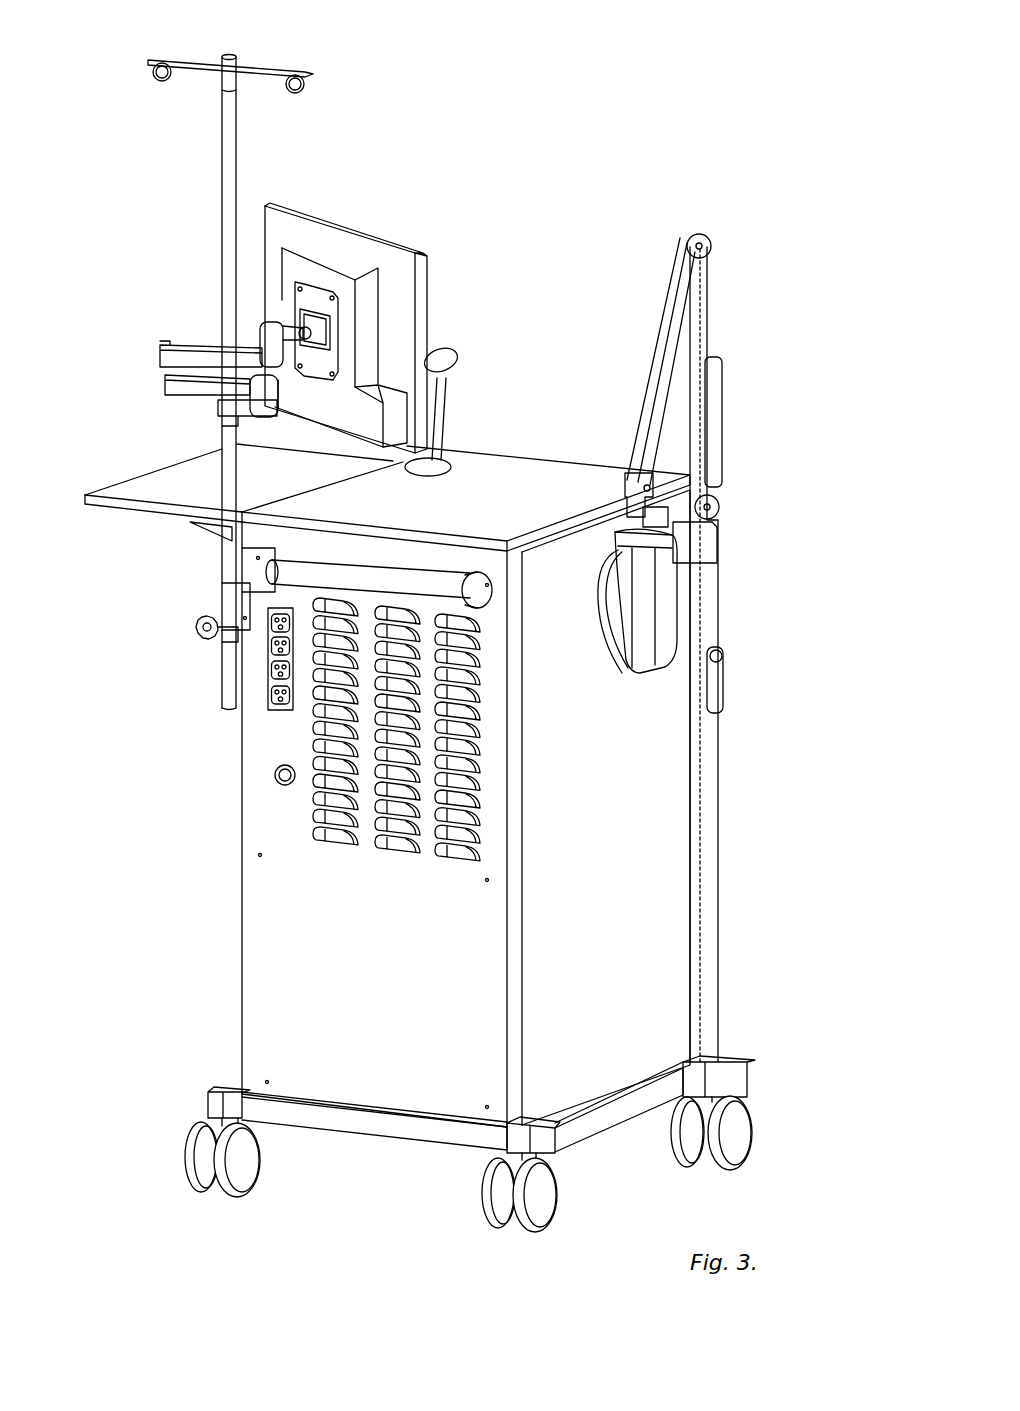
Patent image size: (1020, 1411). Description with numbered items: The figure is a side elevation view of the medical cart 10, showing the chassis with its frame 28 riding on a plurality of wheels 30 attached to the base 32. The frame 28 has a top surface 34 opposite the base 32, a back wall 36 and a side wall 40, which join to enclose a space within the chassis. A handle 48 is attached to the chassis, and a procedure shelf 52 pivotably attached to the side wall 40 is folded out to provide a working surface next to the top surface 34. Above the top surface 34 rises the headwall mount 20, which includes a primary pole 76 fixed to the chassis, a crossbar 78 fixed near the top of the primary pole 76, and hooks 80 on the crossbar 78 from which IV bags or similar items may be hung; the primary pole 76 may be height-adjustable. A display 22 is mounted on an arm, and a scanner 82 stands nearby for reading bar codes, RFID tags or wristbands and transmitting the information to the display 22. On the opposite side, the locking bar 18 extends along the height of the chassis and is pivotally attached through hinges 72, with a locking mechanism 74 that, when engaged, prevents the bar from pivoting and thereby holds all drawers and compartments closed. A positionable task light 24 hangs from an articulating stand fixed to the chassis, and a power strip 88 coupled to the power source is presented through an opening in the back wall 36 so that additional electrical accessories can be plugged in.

The medical cart 10 is at (610, 212).
The locking bar 18 is at (697, 648).
The headwall mount 20 is at (207, 382).
The display 22 is at (400, 282).
The task light 24 is at (640, 668).
The frame 28 is at (575, 1115).
The wheels 30 is at (248, 1168).
The base 32 is at (455, 1128).
The top surface 34 is at (540, 466).
The back wall 36 is at (264, 957).
The side wall 40 is at (660, 968).
The handle 48 is at (372, 577).
The procedure shelf 52 is at (146, 488).
The hinges 72 is at (695, 740).
The locking mechanism 74 is at (725, 660).
The primary pole 76 is at (222, 138).
The crossbar 78 is at (198, 62).
The hooks 80 is at (303, 78).
The scanner 82 is at (456, 362).
The power strip 88 is at (272, 690).